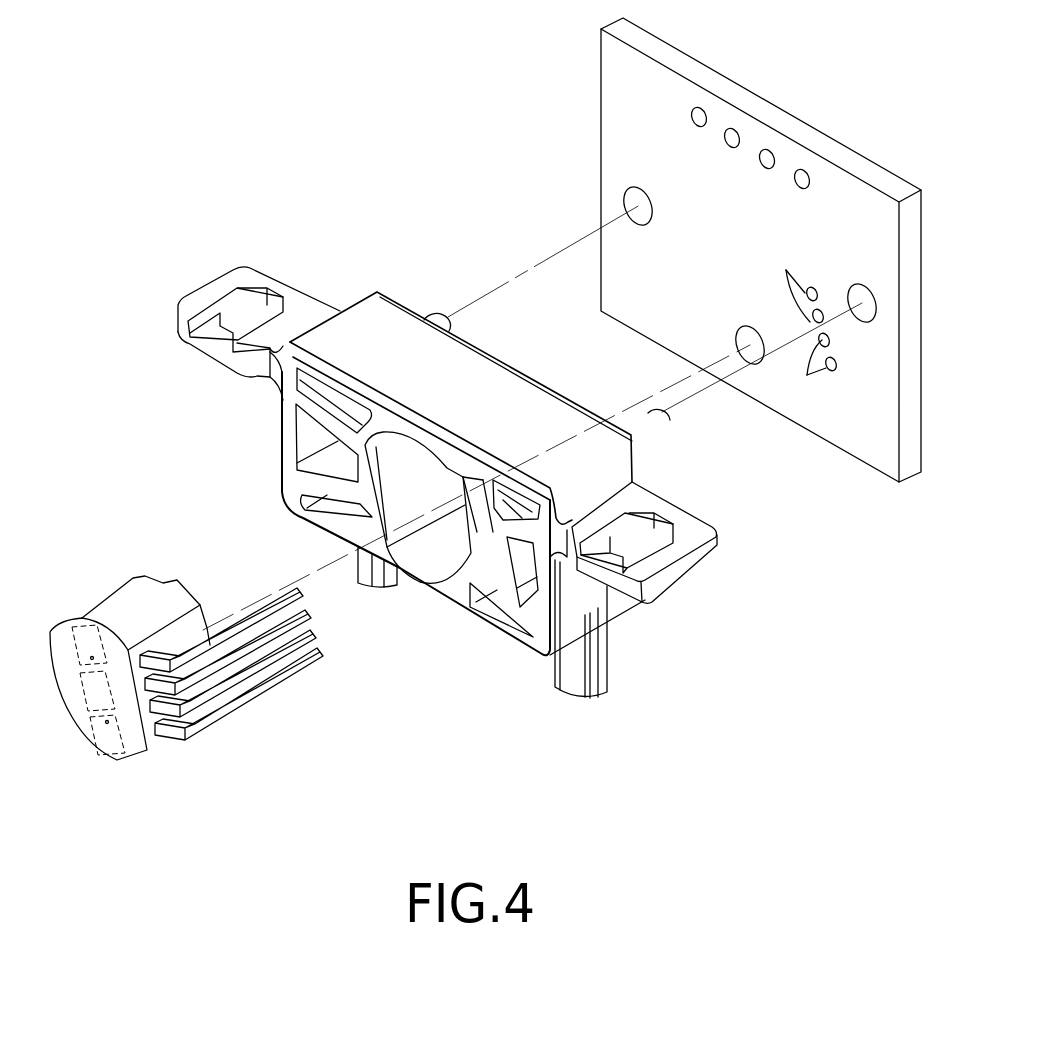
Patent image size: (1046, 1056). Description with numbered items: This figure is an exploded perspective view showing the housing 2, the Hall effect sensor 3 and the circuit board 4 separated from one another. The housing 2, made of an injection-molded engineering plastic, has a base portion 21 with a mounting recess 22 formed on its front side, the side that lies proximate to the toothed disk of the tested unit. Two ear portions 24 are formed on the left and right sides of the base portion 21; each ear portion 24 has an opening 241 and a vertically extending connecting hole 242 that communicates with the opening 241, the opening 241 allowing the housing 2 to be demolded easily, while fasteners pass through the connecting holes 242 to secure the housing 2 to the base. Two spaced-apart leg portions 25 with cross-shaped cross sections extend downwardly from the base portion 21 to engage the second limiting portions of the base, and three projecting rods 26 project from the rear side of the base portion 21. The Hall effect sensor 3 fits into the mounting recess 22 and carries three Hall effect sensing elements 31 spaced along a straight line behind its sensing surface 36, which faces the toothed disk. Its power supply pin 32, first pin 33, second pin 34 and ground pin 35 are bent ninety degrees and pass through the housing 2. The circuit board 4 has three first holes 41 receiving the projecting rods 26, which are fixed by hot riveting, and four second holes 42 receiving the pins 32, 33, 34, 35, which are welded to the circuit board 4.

The housing 2 is at (684, 613).
The base portion 21 is at (497, 388).
The mounting recess 22 is at (438, 552).
The ear portion 24 is at (214, 292).
The opening 241 is at (212, 350).
The connecting hole 242 is at (251, 322).
The leg portion 25 is at (366, 575).
The projecting rod 26 is at (441, 308).
The Hall effect sensor 3 is at (88, 597).
The Hall effect sensing element 31 is at (62, 657).
The power supply pin 32 is at (256, 690).
The first pin 33 is at (305, 620).
The second pin 34 is at (310, 635).
The ground pin 35 is at (290, 596).
The sensing surface 36 is at (133, 738).
The circuit board 4 is at (857, 200).
The first hole 41 is at (633, 202).
The second hole 42 is at (805, 322).